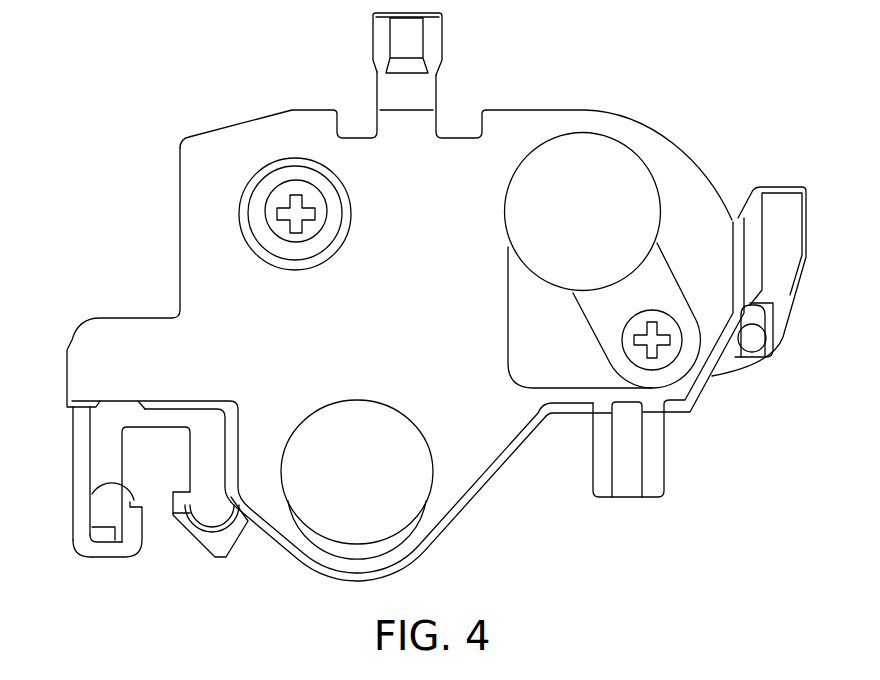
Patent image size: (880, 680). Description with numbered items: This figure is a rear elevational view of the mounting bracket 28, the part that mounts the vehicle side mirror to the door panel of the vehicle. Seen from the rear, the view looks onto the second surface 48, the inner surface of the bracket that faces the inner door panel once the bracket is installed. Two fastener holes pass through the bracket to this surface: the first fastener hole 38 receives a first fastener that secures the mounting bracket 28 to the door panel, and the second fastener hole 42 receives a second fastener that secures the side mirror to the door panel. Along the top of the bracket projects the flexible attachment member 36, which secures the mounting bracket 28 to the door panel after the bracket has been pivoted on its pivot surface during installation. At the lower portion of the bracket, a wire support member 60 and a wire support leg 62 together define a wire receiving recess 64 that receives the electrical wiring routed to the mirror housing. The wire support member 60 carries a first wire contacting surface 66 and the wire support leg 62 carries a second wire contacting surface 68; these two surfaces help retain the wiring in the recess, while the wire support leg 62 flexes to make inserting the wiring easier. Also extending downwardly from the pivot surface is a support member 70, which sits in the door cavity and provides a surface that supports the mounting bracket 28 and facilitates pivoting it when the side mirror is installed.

The mounting bracket 28 is at (649, 134).
The flexible attachment member 36 is at (372, 68).
The first fastener hole 38 is at (408, 421).
The second fastener hole 42 is at (548, 140).
The second surface 48 is at (213, 268).
The wire support member 60 is at (195, 540).
The wire support leg 62 is at (72, 515).
The wire receiving recess 64 is at (148, 464).
The first wire contacting surface 66 is at (183, 493).
The second wire contacting surface 68 is at (93, 490).
The support member 70 is at (650, 498).